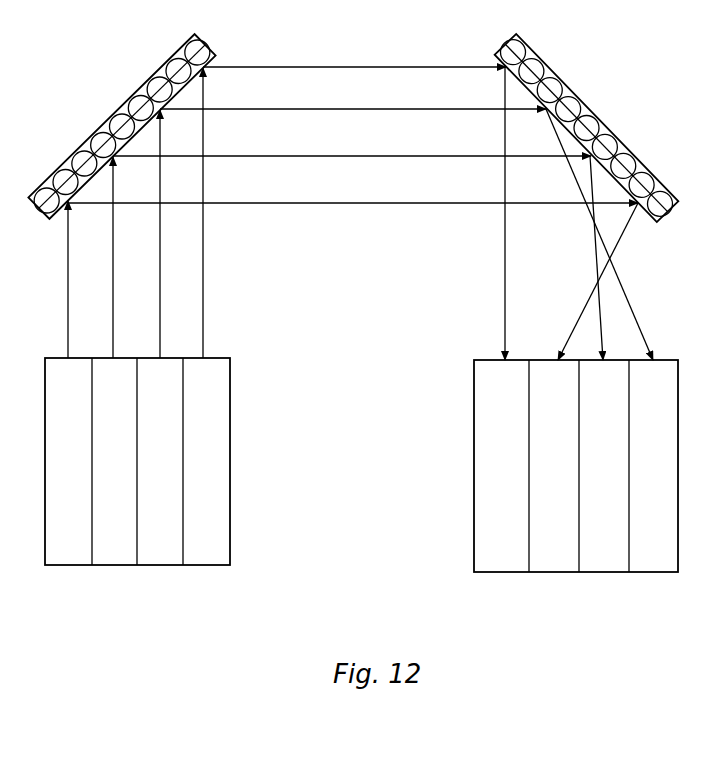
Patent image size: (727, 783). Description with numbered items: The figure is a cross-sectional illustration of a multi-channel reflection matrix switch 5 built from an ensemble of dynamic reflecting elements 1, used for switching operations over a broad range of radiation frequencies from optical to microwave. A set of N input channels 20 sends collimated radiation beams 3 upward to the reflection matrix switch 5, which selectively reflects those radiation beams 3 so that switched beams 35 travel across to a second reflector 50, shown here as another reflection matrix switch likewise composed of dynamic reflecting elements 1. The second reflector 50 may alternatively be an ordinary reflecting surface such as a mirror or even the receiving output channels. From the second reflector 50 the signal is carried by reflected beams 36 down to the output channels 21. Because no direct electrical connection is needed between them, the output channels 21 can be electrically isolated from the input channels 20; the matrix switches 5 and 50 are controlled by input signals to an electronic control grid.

The dynamic reflecting element 1 is at (28, 249).
The collimated radiation beam 3 is at (160, 283).
The reflection matrix switch 5 is at (80, 108).
The second reflector 50 is at (625, 110).
The input channel 20 is at (129, 607).
The output channel 21 is at (567, 607).
The switched beam 35 is at (354, 109).
The reflected beam 36 is at (597, 262).